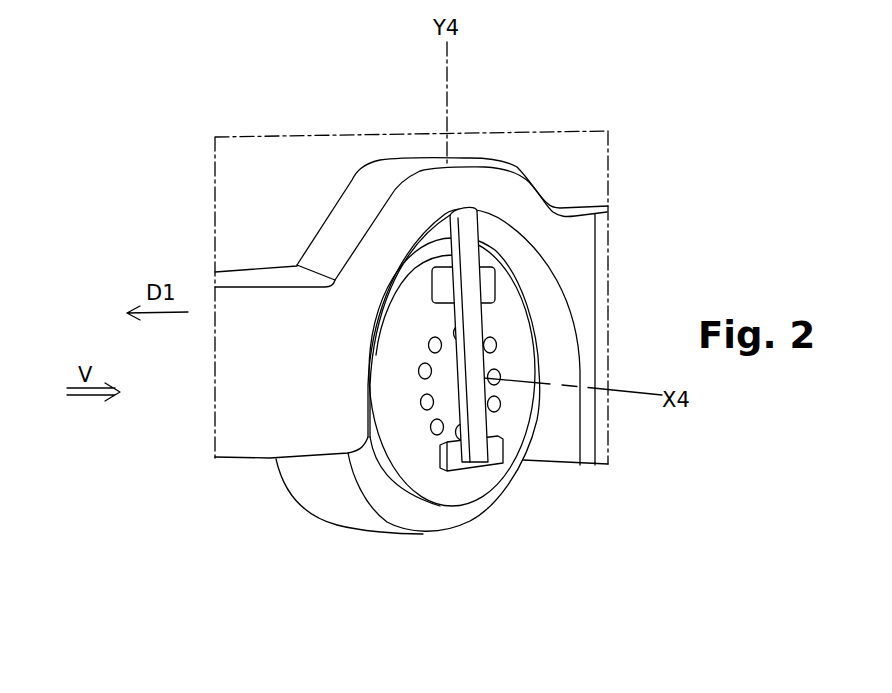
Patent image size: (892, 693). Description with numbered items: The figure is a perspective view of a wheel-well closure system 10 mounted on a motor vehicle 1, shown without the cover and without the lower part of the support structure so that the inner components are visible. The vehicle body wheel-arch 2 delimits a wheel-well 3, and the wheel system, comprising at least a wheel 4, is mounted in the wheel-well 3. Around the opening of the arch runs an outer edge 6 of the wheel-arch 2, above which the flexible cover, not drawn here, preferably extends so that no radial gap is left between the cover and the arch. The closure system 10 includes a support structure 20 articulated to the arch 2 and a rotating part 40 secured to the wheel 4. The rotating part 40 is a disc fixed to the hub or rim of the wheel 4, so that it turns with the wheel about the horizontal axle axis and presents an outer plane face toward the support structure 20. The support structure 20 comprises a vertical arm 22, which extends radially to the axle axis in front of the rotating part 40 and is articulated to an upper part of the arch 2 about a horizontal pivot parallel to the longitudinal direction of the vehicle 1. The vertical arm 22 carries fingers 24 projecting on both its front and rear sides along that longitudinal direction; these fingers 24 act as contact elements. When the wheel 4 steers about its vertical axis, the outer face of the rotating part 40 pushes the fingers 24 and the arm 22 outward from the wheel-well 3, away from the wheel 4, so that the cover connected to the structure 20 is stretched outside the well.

The motor vehicle 1 is at (156, 170).
The vehicle body wheel-arch 2 is at (479, 183).
The wheel-well 3 is at (399, 442).
The wheel 4 is at (373, 518).
The outer edge 6 is at (407, 203).
The wheel-well closure system 10 is at (530, 533).
The support structure 20 is at (549, 268).
The vertical arm 22 is at (470, 328).
The fingers 24 is at (455, 462).
The rotating part 40 is at (521, 410).